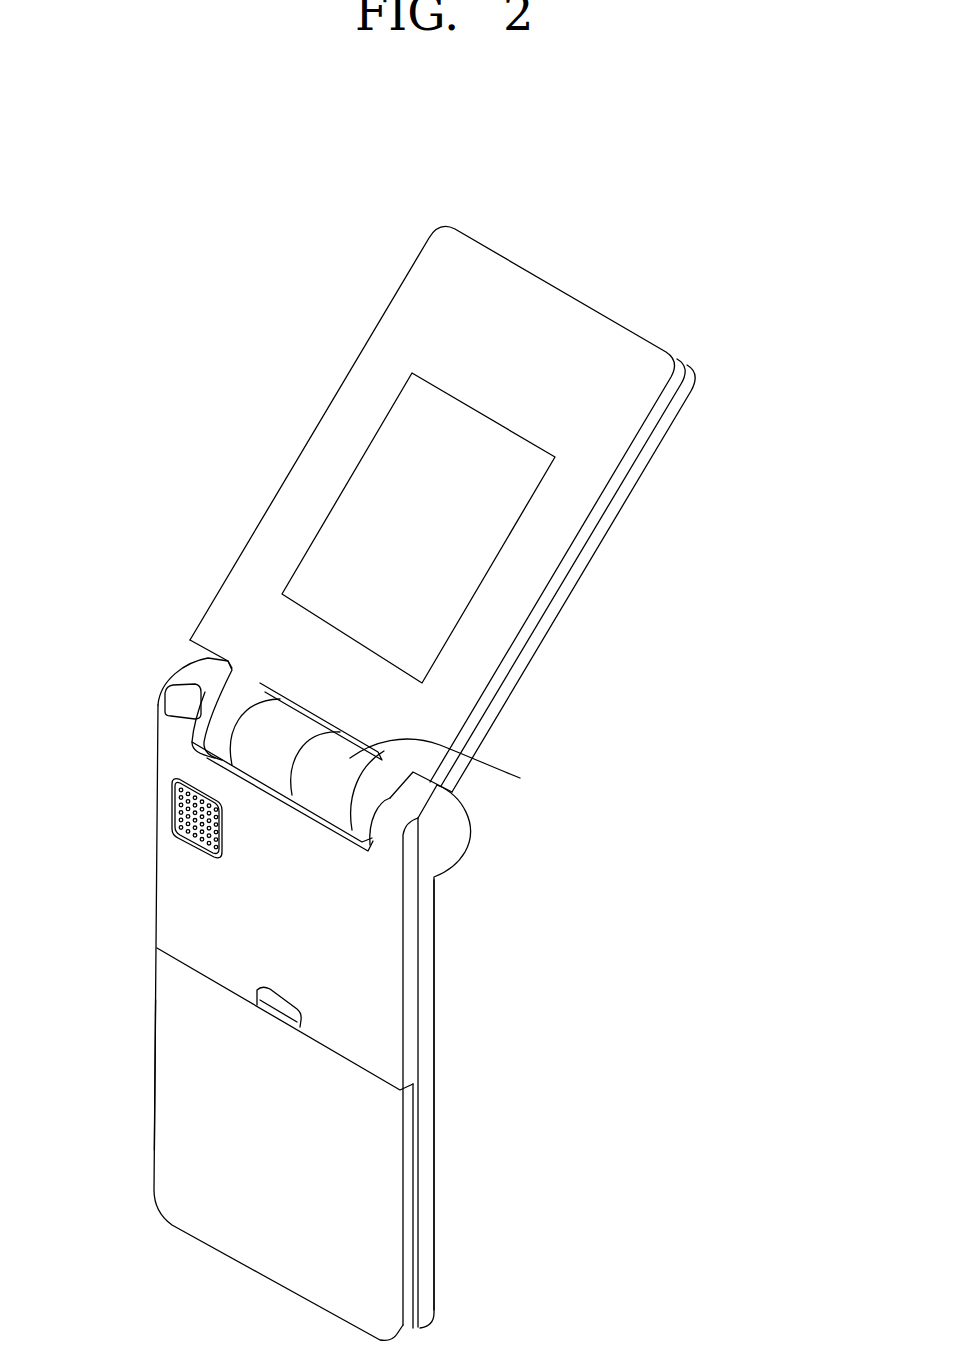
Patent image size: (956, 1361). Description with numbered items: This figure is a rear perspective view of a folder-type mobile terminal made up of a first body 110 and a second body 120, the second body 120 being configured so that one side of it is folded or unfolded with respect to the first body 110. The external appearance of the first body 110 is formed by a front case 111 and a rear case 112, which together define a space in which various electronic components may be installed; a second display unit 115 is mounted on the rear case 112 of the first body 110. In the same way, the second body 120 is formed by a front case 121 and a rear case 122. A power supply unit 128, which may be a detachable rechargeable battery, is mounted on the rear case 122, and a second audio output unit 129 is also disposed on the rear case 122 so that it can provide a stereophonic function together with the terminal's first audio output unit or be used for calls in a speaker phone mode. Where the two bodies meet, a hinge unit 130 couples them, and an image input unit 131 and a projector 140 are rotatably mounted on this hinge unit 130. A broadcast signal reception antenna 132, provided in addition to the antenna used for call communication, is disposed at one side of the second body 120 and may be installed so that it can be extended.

The first body 110 is at (322, 378).
The front case 111 is at (564, 598).
The rear case 112 is at (590, 520).
The second display unit 115 is at (352, 493).
The second body 120 is at (140, 885).
The front case 121 is at (425, 1120).
The rear case 122 is at (410, 1058).
The power supply unit 128 is at (160, 1056).
The second audio output unit 129 is at (175, 810).
The hinge unit 130 is at (460, 837).
The image input unit 131 is at (505, 773).
The broadcast signal reception antenna 132 is at (182, 696).
The projector 140 is at (265, 712).